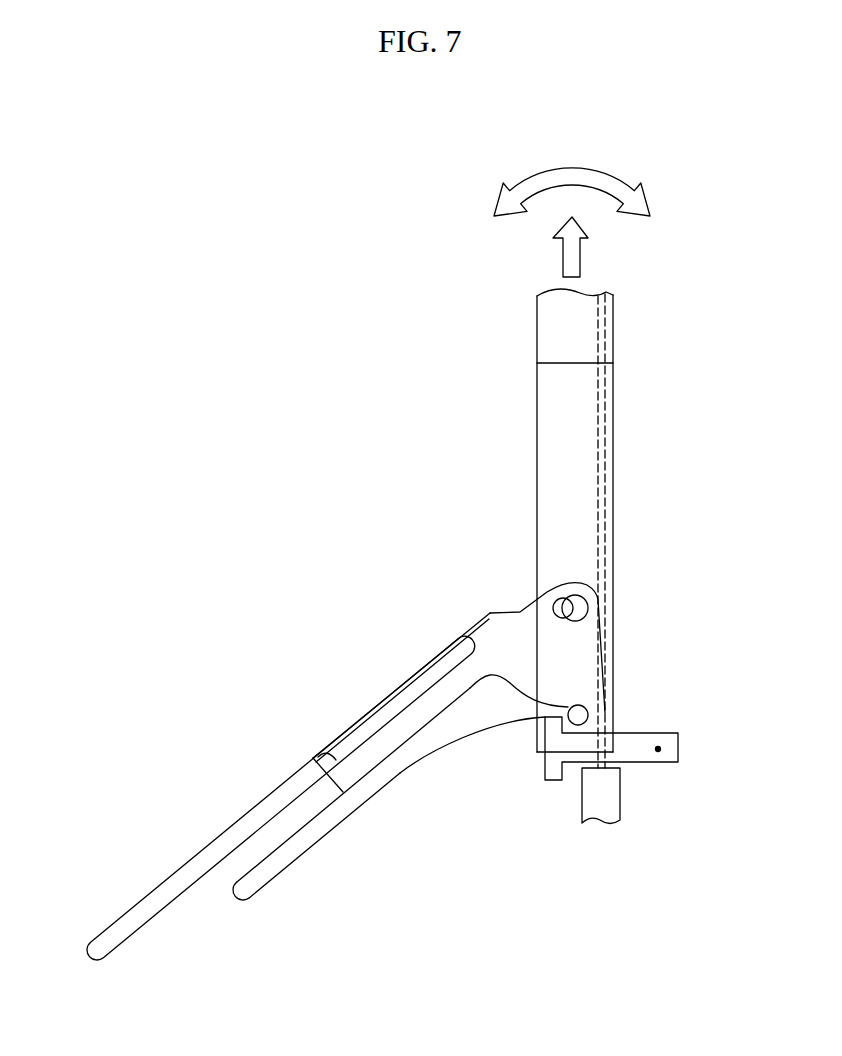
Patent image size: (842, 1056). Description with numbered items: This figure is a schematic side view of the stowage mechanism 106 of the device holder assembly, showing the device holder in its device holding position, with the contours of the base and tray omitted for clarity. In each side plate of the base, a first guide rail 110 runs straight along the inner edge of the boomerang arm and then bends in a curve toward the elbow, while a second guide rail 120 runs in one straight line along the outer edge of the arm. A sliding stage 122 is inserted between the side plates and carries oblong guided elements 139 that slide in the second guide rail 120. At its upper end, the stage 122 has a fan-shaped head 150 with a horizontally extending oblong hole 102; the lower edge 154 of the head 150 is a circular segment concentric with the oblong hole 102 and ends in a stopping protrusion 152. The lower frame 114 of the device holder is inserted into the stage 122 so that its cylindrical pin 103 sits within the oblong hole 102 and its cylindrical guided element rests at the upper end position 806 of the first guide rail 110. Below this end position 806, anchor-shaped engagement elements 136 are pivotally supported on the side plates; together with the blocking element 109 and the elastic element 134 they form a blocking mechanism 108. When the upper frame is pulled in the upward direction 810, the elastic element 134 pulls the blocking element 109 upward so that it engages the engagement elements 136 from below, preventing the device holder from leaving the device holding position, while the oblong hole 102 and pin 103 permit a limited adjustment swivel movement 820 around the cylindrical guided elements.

The stowage mechanism 106 is at (126, 408).
The blocking mechanism 108 is at (678, 858).
The blocking element 109 is at (620, 810).
The first guide rail 110 is at (258, 887).
The lower frame 114 is at (613, 447).
The second guide rail 120 is at (120, 946).
The sliding stage 122 is at (470, 631).
The elastic element 134 is at (599, 402).
The engagement element 136 is at (680, 750).
The oblong guided element 139 is at (313, 760).
The fan-shaped head 150 is at (497, 583).
The stopping protrusion 152 is at (633, 709).
The lower edge 154 is at (505, 700).
The oblong hole 102 is at (588, 615).
The cylindrical pin 103 is at (590, 596).
The upper end position 806 is at (647, 668).
The upward direction 810 is at (562, 258).
The adjustment swivel movement 820 is at (492, 200).